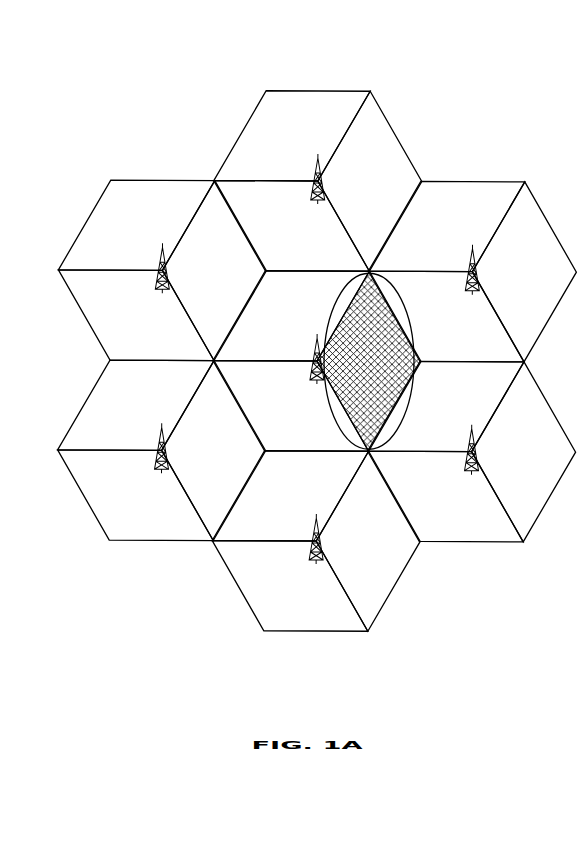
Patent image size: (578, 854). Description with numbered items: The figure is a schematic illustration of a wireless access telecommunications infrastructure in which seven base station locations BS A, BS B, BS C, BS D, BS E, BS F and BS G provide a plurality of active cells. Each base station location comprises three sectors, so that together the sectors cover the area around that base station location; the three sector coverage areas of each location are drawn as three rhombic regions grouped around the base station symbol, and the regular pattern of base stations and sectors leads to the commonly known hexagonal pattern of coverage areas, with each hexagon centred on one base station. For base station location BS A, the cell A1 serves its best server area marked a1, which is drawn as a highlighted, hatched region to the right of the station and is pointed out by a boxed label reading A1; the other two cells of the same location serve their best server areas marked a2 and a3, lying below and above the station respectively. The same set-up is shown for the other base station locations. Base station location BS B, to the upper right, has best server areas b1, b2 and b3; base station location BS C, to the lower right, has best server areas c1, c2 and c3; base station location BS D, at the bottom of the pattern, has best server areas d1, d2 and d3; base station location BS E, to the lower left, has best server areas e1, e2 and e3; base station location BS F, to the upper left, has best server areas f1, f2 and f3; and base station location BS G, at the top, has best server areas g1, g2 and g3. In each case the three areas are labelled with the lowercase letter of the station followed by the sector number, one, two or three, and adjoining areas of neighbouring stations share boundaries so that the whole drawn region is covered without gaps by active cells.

The cell A1 is at (390, 293).
The best server area a1 is at (369, 361).
The best server area a2 is at (291, 406).
The best server area a3 is at (291, 316).
The best server area b1 is at (524, 272).
The best server area b2 is at (446, 316).
The best server area b3 is at (446, 226).
The best server area c1 is at (523, 452).
The best server area c2 is at (445, 496).
The best server area c3 is at (446, 406).
The best server area d1 is at (368, 541).
The best server area d2 is at (290, 586).
The best server area d3 is at (290, 496).
The best server area e1 is at (213, 450).
The best server area e2 is at (135, 495).
The best server area e3 is at (136, 405).
The best server area f1 is at (214, 270).
The best server area f2 is at (136, 315).
The best server area f3 is at (136, 225).
The best server area g1 is at (369, 181).
The best server area g2 is at (291, 226).
The best server area g3 is at (292, 136).
The base station location BS A is at (316, 369).
The base station location BS B is at (471, 280).
The base station location BS C is at (470, 460).
The base station location BS D is at (315, 549).
The base station location BS E is at (160, 458).
The base station location BS F is at (161, 278).
The base station location BS G is at (317, 189).